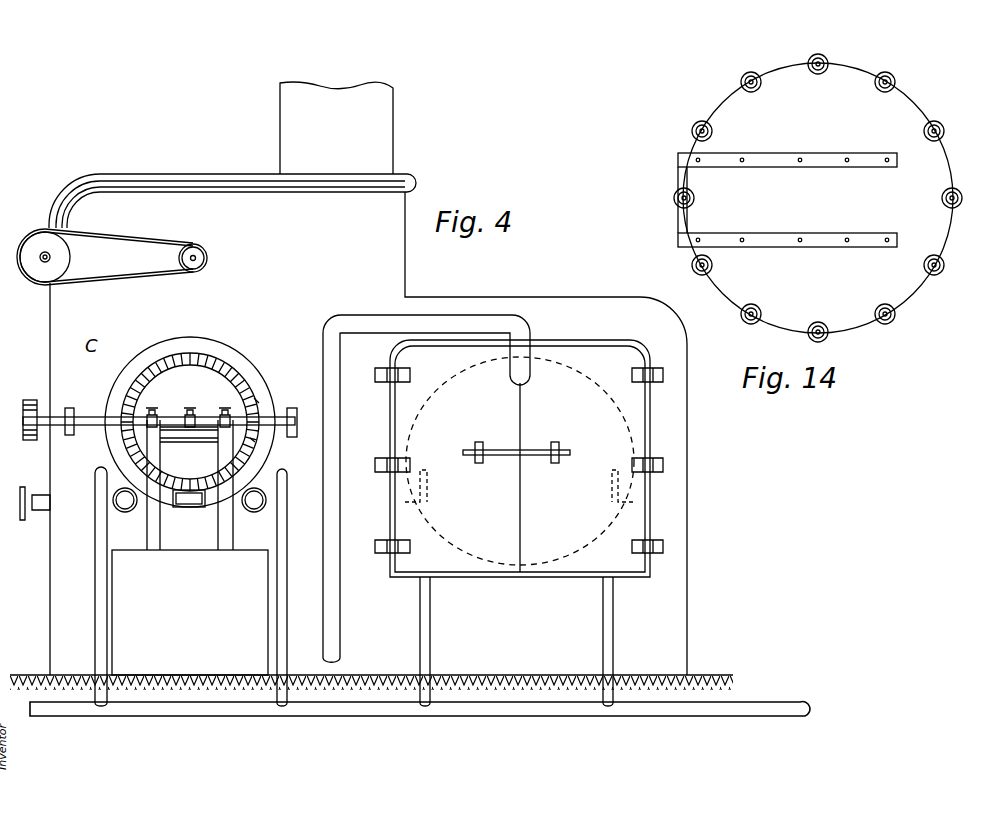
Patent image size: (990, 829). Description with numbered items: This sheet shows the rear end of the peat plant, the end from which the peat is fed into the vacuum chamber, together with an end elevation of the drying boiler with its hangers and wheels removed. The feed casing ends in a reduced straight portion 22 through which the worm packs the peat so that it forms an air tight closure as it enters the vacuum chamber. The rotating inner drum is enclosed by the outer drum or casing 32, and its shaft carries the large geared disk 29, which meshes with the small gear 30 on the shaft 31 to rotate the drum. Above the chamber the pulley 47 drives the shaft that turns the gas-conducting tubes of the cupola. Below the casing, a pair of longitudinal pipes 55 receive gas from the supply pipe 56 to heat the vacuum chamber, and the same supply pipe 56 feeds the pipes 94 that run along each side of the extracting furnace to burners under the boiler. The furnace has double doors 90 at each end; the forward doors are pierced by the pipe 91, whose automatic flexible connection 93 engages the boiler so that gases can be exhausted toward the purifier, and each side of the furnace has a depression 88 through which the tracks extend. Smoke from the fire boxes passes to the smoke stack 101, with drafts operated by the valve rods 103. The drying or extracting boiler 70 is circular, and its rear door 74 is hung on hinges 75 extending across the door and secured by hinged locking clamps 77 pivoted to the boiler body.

In FIG. 4, the reduced straight portion 22 is at (190, 506).
In FIG. 4, the large geared disk 29 is at (190, 422).
In FIG. 4, the small gear 30 is at (263, 405).
In FIG. 4, the shaft 31 is at (80, 450).
In FIG. 4, the outer drum or casing 32 is at (181, 341).
In FIG. 4, the pulley 47 is at (193, 252).
In FIG. 4, the longitudinal pipes 55 is at (103, 594).
In FIG. 4, the supply pipe 56 is at (388, 707).
In FIG. 14, the drying or extracting boiler 70 is at (675, 200).
In FIG. 14, the door 74 is at (818, 198).
In FIG. 14, the hinges 75 is at (786, 153).
In FIG. 14, the hinged locking clamps 77 is at (825, 58).
In FIG. 4, the depression 88 is at (430, 494).
In FIG. 4, the double doors 90 is at (516, 439).
In FIG. 4, the pipe 91 is at (497, 318).
In FIG. 4, the automatic flexible connection 93 is at (535, 350).
In FIG. 4, the pipes 94 is at (431, 626).
In FIG. 4, the smoke stack 101 is at (336, 128).
In FIG. 4, the valve rods 103 is at (125, 508).